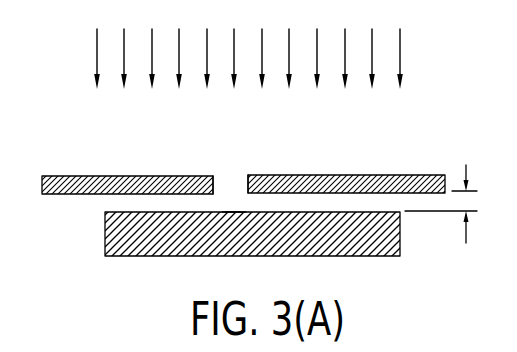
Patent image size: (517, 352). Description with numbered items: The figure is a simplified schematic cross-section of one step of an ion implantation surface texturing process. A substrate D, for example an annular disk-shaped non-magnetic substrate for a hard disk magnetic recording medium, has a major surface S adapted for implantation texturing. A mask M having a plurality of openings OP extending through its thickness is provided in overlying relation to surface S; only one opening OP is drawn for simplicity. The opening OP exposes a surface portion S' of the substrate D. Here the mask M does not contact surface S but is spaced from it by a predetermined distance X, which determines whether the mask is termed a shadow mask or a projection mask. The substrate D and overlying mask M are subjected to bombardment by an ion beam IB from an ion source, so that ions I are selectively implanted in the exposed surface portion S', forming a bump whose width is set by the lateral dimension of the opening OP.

The ion beam IB is at (412, 40).
The ions I is at (228, 172).
The mask M is at (424, 170).
The opening OP is at (245, 181).
The surface S is at (226, 232).
The exposed surface portion S' is at (260, 164).
The substrate D is at (241, 247).
The mask-surface distance X is at (442, 219).